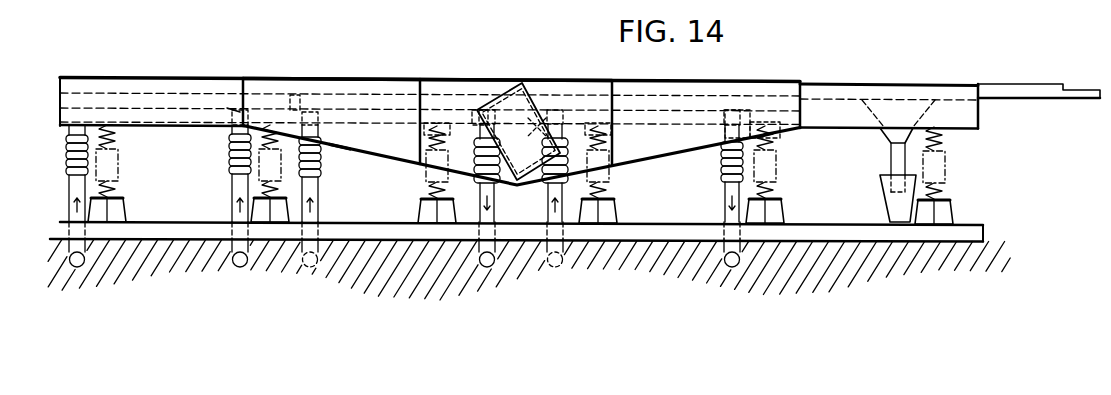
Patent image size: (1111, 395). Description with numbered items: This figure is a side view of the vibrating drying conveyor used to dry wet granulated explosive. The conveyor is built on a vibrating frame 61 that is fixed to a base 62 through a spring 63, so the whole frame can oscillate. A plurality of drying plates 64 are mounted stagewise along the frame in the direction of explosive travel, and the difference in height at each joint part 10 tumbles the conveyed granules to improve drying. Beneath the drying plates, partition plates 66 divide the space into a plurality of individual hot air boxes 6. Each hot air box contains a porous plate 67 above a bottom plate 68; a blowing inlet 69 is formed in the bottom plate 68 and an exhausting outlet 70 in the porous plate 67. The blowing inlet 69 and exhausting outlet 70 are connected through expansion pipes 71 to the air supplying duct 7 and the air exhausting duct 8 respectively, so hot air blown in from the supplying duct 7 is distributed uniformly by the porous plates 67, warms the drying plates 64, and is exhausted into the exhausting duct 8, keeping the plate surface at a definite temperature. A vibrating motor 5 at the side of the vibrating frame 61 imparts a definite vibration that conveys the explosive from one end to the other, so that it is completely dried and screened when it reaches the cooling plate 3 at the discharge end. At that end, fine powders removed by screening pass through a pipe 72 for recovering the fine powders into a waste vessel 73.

The cooling plate 3 is at (1020, 90).
The vibrating motor 5 is at (540, 118).
The hot air box 6 is at (382, 104).
The air supplying duct 7 is at (333, 223).
The air exhausting duct 8 is at (487, 250).
The joint part 10 is at (435, 78).
The vibrating frame 61 is at (410, 78).
The base 62 is at (773, 213).
The spring 63 is at (938, 163).
The drying plate 64 is at (357, 78).
The partition plate 66 is at (300, 98).
The porous plate 67 is at (140, 107).
The bottom plate 68 is at (168, 127).
The blowing inlet 69 is at (340, 144).
The exhausting outlet 70 is at (470, 108).
The expansion pipe 71 is at (303, 174).
The pipe for recovering the fine powders 72 is at (893, 134).
The waste vessel 73 is at (902, 213).